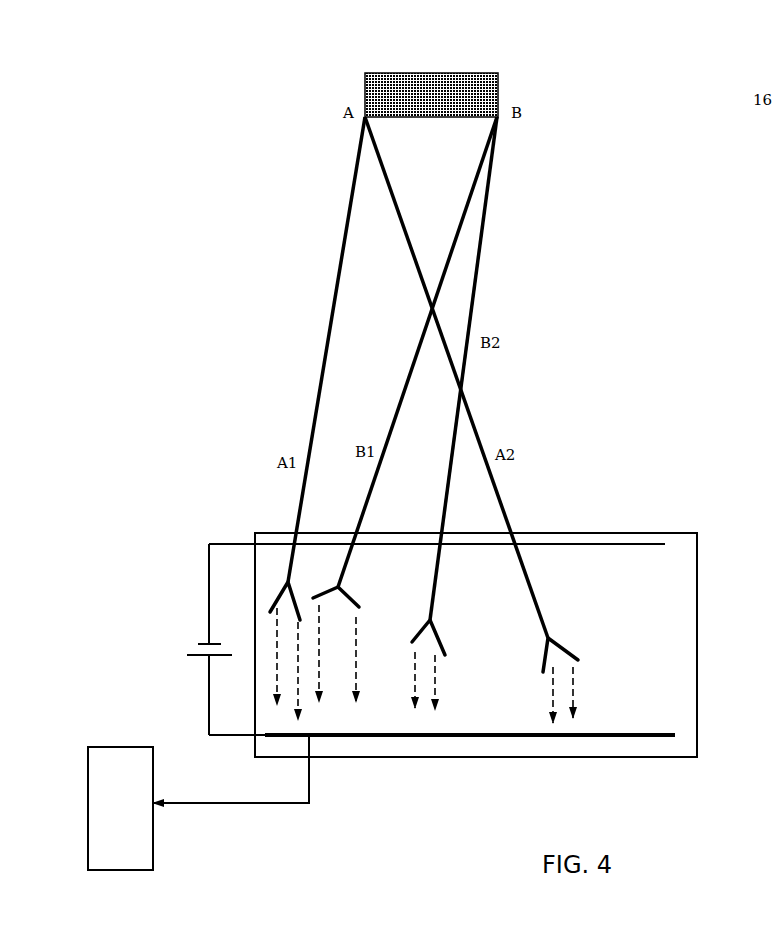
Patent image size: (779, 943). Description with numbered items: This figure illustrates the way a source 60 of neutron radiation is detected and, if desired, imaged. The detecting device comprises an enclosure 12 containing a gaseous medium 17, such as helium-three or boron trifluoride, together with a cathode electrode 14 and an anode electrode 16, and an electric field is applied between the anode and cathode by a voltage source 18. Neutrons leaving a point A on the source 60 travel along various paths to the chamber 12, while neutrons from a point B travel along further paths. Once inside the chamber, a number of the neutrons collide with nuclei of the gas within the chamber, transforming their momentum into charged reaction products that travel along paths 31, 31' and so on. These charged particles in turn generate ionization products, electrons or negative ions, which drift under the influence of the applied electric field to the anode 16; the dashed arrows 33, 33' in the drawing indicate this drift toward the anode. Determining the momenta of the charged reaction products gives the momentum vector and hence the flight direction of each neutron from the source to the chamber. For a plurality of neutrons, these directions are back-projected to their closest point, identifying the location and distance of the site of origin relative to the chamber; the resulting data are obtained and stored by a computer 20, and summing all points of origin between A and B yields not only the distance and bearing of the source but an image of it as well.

The source of neutron radiation 60 is at (390, 77).
The enclosure 12 is at (700, 590).
The gaseous medium 17 is at (655, 575).
The cathode electrode 14 is at (285, 540).
The anode electrode 16 is at (460, 738).
The voltage source 18 is at (232, 639).
The computer 20 is at (198, 802).
The path of charged reaction product 31 is at (218, 573).
The path of charged reaction product 31' is at (326, 585).
The direction of movement 33 is at (210, 651).
The direction of movement 33' is at (223, 671).